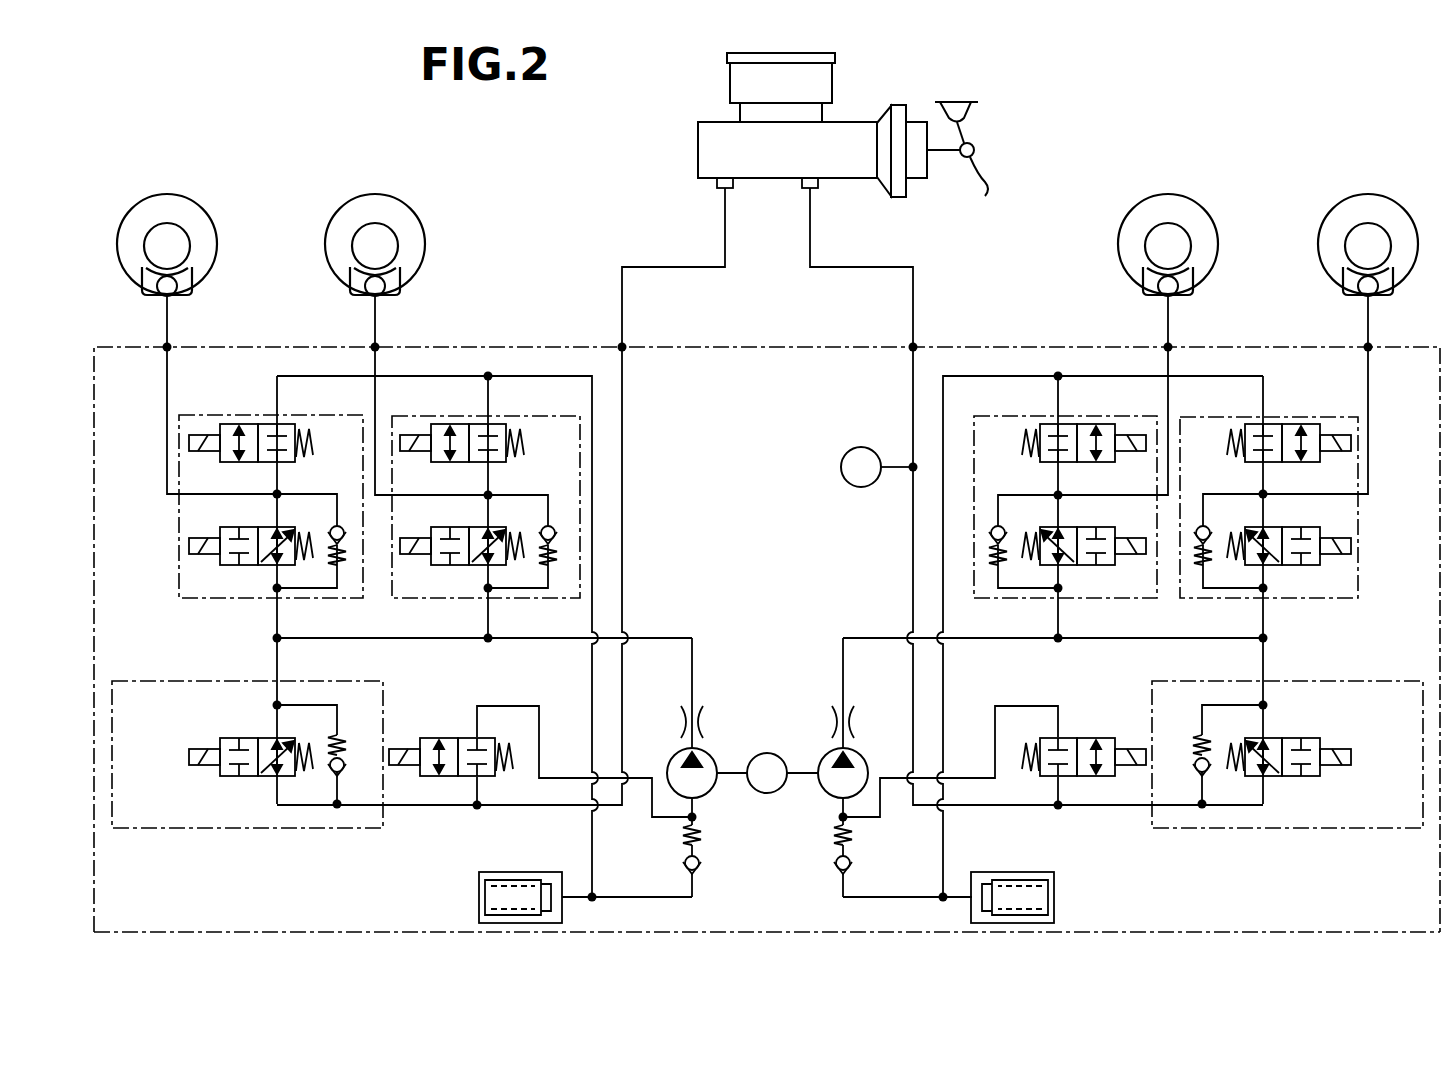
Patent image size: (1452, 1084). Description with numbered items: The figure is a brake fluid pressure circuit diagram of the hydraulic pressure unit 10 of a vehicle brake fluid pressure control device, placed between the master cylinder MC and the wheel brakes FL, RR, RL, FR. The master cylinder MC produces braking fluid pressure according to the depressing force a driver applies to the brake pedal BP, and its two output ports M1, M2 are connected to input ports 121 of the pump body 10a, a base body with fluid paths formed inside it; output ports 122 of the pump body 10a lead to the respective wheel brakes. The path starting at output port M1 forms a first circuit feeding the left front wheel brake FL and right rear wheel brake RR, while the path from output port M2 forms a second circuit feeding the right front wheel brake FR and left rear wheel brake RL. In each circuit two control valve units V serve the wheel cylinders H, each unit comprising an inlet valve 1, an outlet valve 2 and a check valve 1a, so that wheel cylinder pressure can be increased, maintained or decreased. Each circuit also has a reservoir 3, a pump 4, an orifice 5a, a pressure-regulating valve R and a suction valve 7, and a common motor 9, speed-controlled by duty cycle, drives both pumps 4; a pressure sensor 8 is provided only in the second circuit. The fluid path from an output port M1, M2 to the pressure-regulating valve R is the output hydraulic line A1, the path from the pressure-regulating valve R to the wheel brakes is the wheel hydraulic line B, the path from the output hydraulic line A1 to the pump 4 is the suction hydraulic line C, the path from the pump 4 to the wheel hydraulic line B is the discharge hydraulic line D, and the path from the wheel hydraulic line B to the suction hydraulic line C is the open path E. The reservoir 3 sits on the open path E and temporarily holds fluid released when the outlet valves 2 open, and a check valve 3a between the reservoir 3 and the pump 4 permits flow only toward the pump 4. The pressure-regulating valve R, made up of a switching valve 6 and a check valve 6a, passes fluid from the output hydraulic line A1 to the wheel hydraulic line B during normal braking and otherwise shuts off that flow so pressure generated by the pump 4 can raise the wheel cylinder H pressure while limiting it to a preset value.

The inlet valve 1 is at (218, 558).
The check valve 1a is at (341, 525).
The outlet valve 2 is at (289, 424).
The reservoir 3 is at (463, 911).
The check valve 3a is at (703, 864).
The pump 4 is at (709, 796).
The orifice 5a is at (703, 723).
The switching valve 6 is at (248, 778).
The check valve 6a is at (345, 762).
The suction valve 7 is at (428, 737).
The pressure sensor 8 is at (841, 469).
The motor 9 is at (766, 753).
The hydraulic pressure unit 10 is at (996, 326).
The pump body 10a is at (298, 933).
The input port 121 is at (621, 340).
The output port 122 is at (168, 346).
The left front wheel brake FL is at (167, 196).
The right rear wheel brake RR is at (375, 196).
The left rear wheel brake RL is at (1168, 196).
The right front wheel brake FR is at (1368, 196).
The wheel cylinder H is at (178, 288).
The master cylinder MC is at (712, 148).
The output port M1 is at (720, 188).
The output port M2 is at (816, 188).
The brake pedal BP is at (996, 190).
The open path E is at (514, 372).
The output hydraulic line A1 is at (626, 427).
The wheel hydraulic line B is at (168, 384).
The suction hydraulic line C is at (558, 780).
The discharge hydraulic line D is at (660, 636).
The control valve unit V is at (179, 512).
The pressure-regulating valve R is at (185, 830).